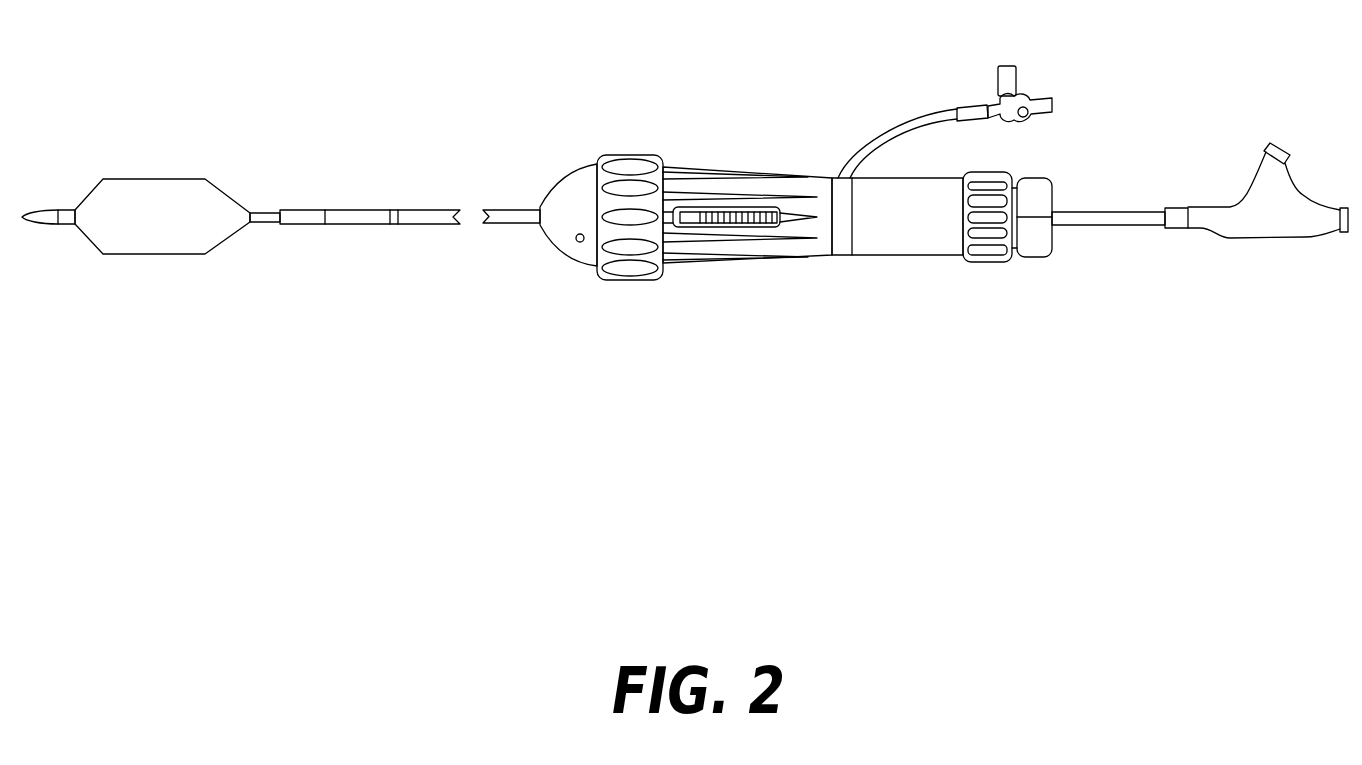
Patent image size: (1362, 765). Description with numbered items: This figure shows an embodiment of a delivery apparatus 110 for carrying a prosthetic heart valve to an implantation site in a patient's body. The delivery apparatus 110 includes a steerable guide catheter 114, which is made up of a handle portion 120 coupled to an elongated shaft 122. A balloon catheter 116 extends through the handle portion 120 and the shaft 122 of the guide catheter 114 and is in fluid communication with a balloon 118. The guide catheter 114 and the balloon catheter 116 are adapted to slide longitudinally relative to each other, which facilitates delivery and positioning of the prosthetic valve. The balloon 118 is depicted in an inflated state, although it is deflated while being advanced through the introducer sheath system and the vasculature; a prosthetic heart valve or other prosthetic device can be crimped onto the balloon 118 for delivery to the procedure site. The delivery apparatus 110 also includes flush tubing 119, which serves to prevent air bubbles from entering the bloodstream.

The delivery apparatus 110 is at (767, 169).
The steerable guide catheter 114 is at (576, 157).
The balloon catheter 116 is at (268, 224).
The balloon 118 is at (152, 197).
The flush tubing 119 is at (933, 117).
The handle portion 120 is at (805, 170).
The elongated shaft 122 is at (510, 220).